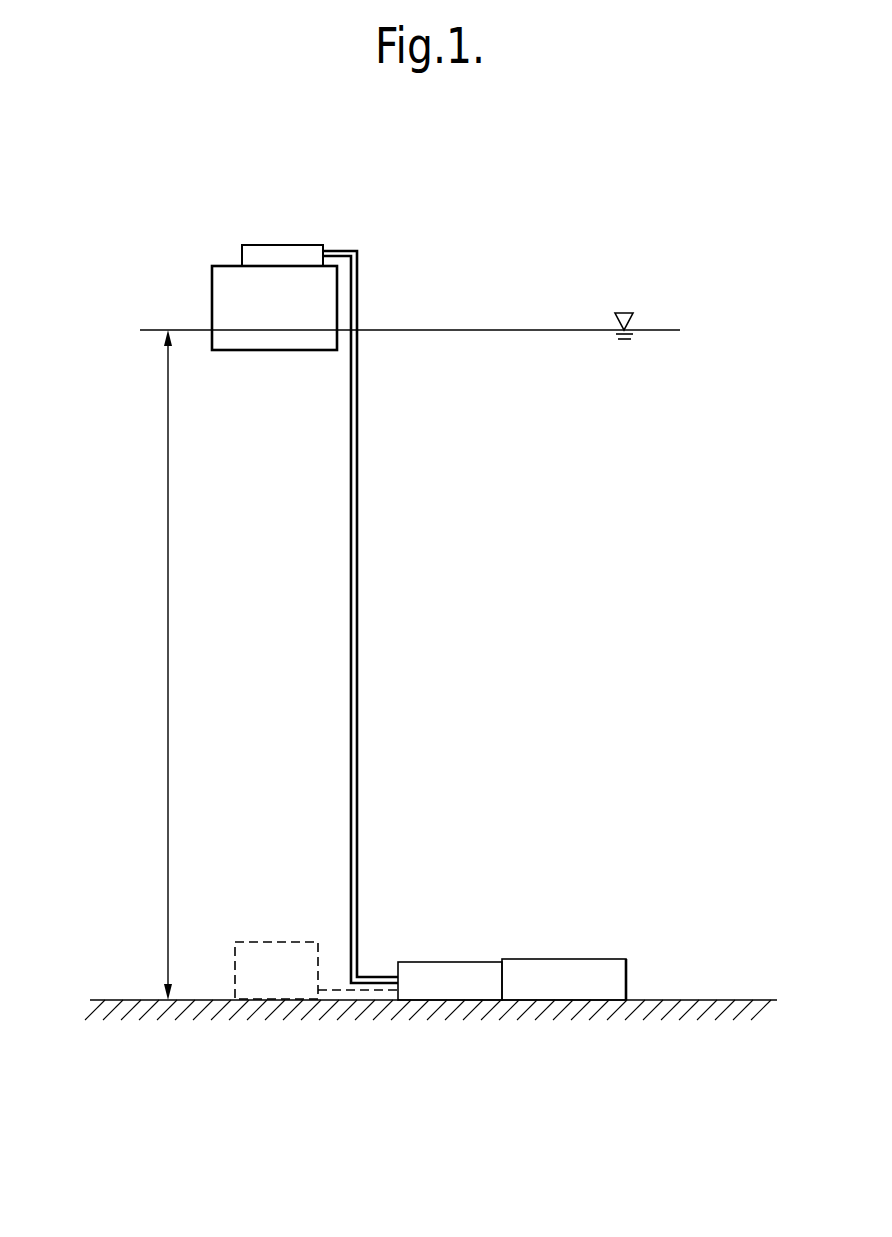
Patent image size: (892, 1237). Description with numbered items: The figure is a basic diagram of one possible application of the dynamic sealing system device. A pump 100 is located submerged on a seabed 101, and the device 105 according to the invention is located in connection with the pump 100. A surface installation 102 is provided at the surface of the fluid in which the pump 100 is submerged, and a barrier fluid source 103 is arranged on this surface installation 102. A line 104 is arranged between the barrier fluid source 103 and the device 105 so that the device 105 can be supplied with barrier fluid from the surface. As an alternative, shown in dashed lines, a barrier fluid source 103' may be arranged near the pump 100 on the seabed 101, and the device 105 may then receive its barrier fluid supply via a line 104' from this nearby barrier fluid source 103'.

The pump 100 is at (582, 968).
The seabed 101 is at (745, 1000).
The surface installation 102 is at (223, 277).
The barrier fluid source 103 is at (289, 202).
The barrier fluid source 103' is at (276, 924).
The line 104 is at (393, 617).
The line 104' is at (358, 1041).
The device 105 is at (440, 972).